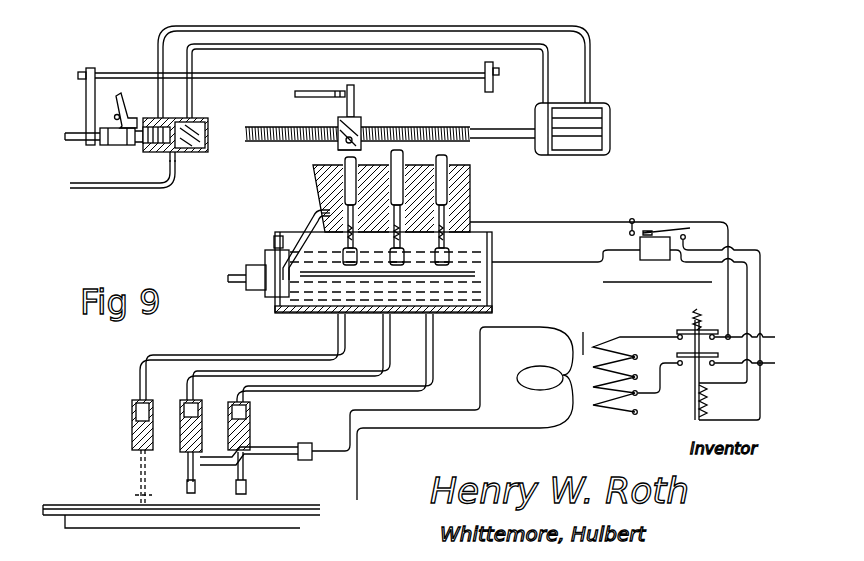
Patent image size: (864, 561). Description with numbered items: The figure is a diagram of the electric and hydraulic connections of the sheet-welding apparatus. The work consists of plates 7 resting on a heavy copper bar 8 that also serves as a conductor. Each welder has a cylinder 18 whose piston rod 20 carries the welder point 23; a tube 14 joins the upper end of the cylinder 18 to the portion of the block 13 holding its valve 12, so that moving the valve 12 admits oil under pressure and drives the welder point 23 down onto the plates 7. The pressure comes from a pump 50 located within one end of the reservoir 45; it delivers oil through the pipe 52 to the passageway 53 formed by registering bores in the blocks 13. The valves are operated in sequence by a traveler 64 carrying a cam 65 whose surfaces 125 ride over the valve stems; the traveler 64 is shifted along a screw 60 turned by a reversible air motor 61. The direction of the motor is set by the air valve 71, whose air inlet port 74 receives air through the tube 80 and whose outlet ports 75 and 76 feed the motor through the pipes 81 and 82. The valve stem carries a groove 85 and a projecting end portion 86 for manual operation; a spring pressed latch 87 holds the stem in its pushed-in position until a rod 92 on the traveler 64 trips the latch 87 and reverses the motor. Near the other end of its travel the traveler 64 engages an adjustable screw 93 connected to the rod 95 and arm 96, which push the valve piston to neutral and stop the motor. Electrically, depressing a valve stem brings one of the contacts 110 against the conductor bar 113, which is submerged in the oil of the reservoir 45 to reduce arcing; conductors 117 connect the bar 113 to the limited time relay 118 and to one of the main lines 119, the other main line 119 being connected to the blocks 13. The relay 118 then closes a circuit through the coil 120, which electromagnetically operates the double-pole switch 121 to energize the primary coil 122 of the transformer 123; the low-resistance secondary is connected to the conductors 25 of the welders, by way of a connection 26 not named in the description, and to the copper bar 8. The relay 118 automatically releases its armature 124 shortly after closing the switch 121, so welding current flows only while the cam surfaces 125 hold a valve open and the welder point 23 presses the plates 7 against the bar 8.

The plates 7 is at (264, 507).
The heavy copper bar 8 is at (238, 518).
The valve 12 is at (357, 166).
The block 13 is at (473, 206).
The tube 14 is at (296, 388).
The cylinder 18 is at (184, 403).
The piston rod 20 is at (146, 460).
The welder point 23 is at (187, 490).
The conductors 25 is at (268, 452).
The fitting 26 is at (307, 461).
The reservoir 45 is at (492, 292).
The pump 50 is at (278, 287).
The pipe 52 is at (288, 206).
The passageway 53 is at (330, 212).
The screw 60 is at (400, 126).
The reversible air motor 61 is at (598, 104).
The traveler 64 is at (356, 122).
The cam 65 is at (340, 151).
The air valve 71 is at (200, 151).
The air inlet port 74 is at (178, 153).
The outlet port 75 is at (164, 118).
The outlet port 76 is at (199, 121).
The tube 80 is at (134, 189).
The pipe 81 is at (272, 27).
The pipe 82 is at (312, 48).
The groove 85 is at (124, 146).
The projecting end portion 86 is at (76, 141).
The spring pressed latch 87 is at (128, 108).
The rod 92 is at (316, 98).
The adjustable screw 93 is at (492, 84).
The rod 95 is at (258, 80).
The arm 96 is at (86, 101).
The contacts 110 is at (398, 266).
The conductor bar 113 is at (412, 278).
The conductors 117 is at (533, 217).
The limited time relay 118 is at (640, 252).
The main lines 119 is at (744, 366).
The coil 120 is at (692, 400).
The double-pole switch 121 is at (688, 332).
The primary coil 122 is at (617, 413).
The transformer 123 is at (579, 333).
The armature 124 is at (656, 230).
The cam surfaces 125 is at (548, 368).